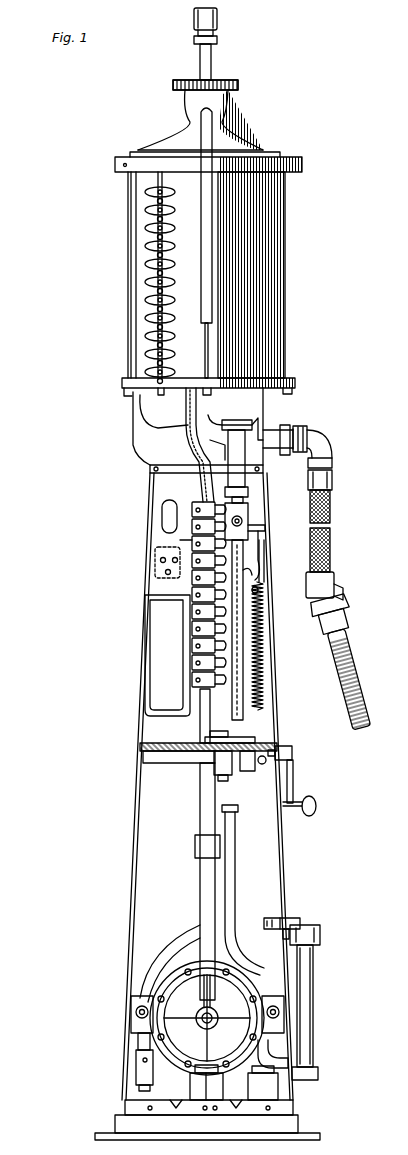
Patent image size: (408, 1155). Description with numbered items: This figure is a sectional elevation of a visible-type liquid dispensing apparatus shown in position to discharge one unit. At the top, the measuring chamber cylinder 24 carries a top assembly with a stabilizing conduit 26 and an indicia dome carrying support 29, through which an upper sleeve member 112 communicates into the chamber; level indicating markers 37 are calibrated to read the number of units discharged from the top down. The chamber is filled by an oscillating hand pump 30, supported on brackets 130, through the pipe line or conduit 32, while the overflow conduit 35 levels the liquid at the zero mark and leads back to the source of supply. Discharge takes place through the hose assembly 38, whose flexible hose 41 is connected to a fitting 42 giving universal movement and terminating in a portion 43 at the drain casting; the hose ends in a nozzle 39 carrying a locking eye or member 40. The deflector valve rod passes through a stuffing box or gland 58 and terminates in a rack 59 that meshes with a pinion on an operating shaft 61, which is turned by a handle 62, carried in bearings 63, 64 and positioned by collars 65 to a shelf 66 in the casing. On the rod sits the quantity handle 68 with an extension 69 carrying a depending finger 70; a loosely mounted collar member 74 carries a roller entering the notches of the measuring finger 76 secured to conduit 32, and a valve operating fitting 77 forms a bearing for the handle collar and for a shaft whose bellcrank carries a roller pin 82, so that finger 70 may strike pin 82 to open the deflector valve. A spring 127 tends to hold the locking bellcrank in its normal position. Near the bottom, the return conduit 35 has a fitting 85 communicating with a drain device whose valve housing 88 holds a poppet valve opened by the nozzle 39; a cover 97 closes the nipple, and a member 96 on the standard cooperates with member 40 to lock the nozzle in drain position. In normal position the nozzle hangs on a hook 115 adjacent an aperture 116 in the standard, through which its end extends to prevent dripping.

The sleeve member 112 is at (211, 60).
The indicia dome carrying support 29 is at (232, 99).
The measuring chamber cylinder 24 is at (192, 133).
The stabilizing conduit 26 is at (204, 203).
The level indicating markers 37 is at (147, 212).
The fitting portion 43 is at (272, 435).
The fitting 42 is at (297, 432).
The hose assembly 38 is at (333, 497).
The flexible hose 41 is at (332, 556).
The locking eye or member 40 is at (337, 616).
The nozzle 39 is at (348, 645).
The stuffing box or gland 58 is at (250, 485).
The quantity handle 68 is at (250, 516).
The extension 69 is at (262, 535).
The depending finger 70 is at (266, 566).
The roller pin 82 is at (249, 580).
The collar member 74 is at (200, 505).
The valve operating fitting 77 is at (178, 541).
The aperture 116 is at (160, 518).
The hook 115 is at (152, 556).
The measuring finger 76 is at (195, 672).
The spring 127 is at (265, 678).
The rack 59 is at (244, 700).
The shelf 66 is at (146, 748).
The operating shaft 61 is at (280, 748).
The bearing 64 is at (205, 765).
The collars 65 is at (228, 773).
The bearing 63 is at (258, 766).
The handle 62 is at (294, 773).
The pipe line or conduit 32 is at (200, 806).
The overflow conduit 35 is at (236, 853).
The oscillating hand pump 30 is at (202, 1000).
The brackets 130 is at (130, 1020).
The member 96 is at (293, 916).
The cover 97 is at (320, 932).
The valve housing 88 is at (315, 996).
The fitting 85 is at (292, 1072).